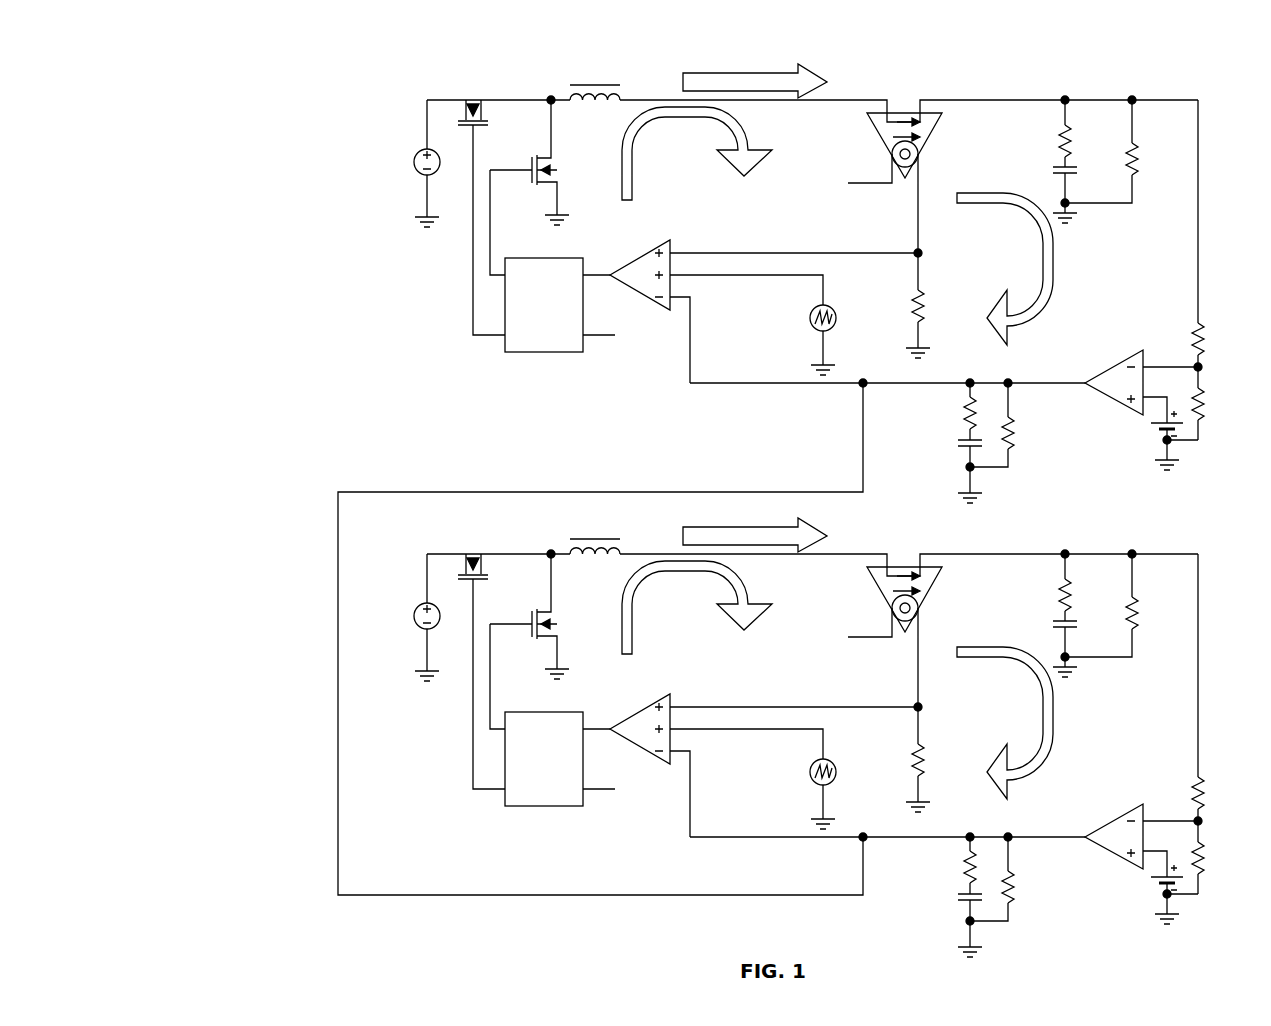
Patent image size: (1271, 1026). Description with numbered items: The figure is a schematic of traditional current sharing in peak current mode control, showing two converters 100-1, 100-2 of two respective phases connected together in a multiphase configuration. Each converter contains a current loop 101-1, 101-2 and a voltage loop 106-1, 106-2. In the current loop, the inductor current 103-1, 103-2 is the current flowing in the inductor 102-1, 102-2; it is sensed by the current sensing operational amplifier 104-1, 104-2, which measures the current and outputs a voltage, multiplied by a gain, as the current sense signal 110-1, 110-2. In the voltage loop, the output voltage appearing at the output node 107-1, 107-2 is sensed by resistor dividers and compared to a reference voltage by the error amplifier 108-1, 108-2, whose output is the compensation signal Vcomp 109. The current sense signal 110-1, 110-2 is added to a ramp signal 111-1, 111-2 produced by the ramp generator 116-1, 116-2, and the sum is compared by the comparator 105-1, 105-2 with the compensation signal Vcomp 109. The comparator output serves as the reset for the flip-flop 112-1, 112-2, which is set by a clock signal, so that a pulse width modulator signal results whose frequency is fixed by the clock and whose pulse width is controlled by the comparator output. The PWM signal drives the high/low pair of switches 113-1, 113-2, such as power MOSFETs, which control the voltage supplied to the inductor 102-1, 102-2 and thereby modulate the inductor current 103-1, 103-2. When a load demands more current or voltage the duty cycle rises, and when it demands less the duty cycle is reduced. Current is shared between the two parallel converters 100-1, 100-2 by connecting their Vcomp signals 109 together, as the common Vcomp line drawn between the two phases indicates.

The converter 100-1 is at (224, 213).
The converter 100-2 is at (686, 737).
The current loop 101-1 is at (697, 153).
The current loop 101-2 is at (697, 607).
The inductor 102-1 is at (599, 106).
The inductor 102-2 is at (599, 560).
The inductor current 103-1 is at (784, 82).
The inductor current 103-2 is at (784, 536).
The current sensing operational amplifier 104-1 is at (895, 183).
The current sensing operational amplifier 104-2 is at (895, 637).
The comparator 105-1 is at (652, 298).
The comparator 105-2 is at (652, 752).
The voltage loop 106-1 is at (1005, 269).
The voltage loop 106-2 is at (1005, 723).
The output node with load of first phase 107-1 is at (1138, 149).
The output node with load of second phase 107-2 is at (1138, 603).
The error amplifier 108-1 is at (1141, 397).
The error amplifier 108-2 is at (1141, 851).
The Vcomp signal 109 is at (711, 624).
The current sense signal 110-1 is at (796, 242).
The current sense signal 110-2 is at (796, 696).
The ramp signal 111-1 is at (746, 290).
The ramp signal 111-2 is at (746, 744).
The flip-flop 112-1 is at (562, 323).
The flip-flop 112-2 is at (561, 778).
The high/low pair of switches 113-1 is at (529, 160).
The high/low pair of switches 113-2 is at (529, 614).
The ramp generator 116-1 is at (799, 340).
The ramp generator 116-2 is at (799, 794).